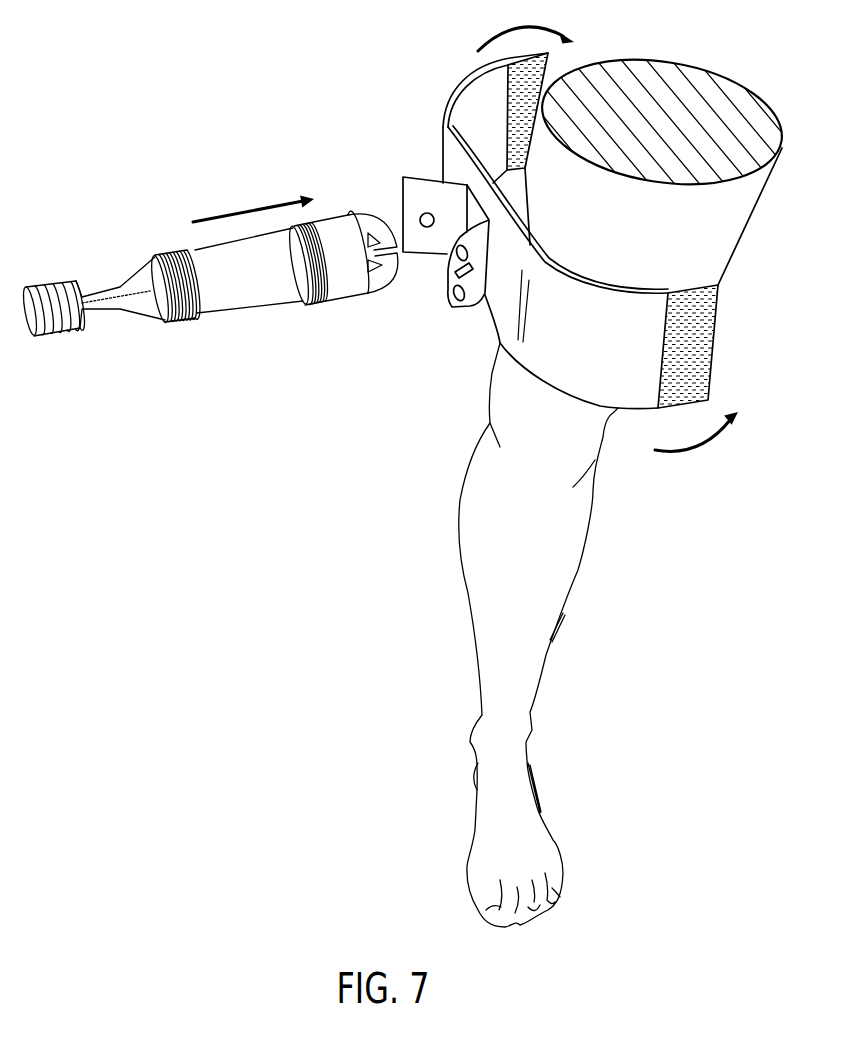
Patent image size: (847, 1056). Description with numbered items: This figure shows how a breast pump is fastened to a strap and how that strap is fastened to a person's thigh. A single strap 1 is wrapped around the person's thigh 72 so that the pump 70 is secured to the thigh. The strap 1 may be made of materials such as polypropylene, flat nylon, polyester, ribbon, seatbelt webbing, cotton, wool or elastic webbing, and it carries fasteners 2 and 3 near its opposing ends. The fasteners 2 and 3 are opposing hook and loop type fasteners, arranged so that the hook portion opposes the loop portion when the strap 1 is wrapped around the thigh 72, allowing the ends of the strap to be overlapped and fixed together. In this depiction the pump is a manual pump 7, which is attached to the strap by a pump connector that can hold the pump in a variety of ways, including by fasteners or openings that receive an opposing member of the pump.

The strap 1 is at (557, 353).
The fastener 2 is at (687, 353).
The fastener 3 is at (518, 82).
The manual pump 7 is at (209, 290).
The pump 70 is at (197, 250).
The thigh 72 is at (740, 199).